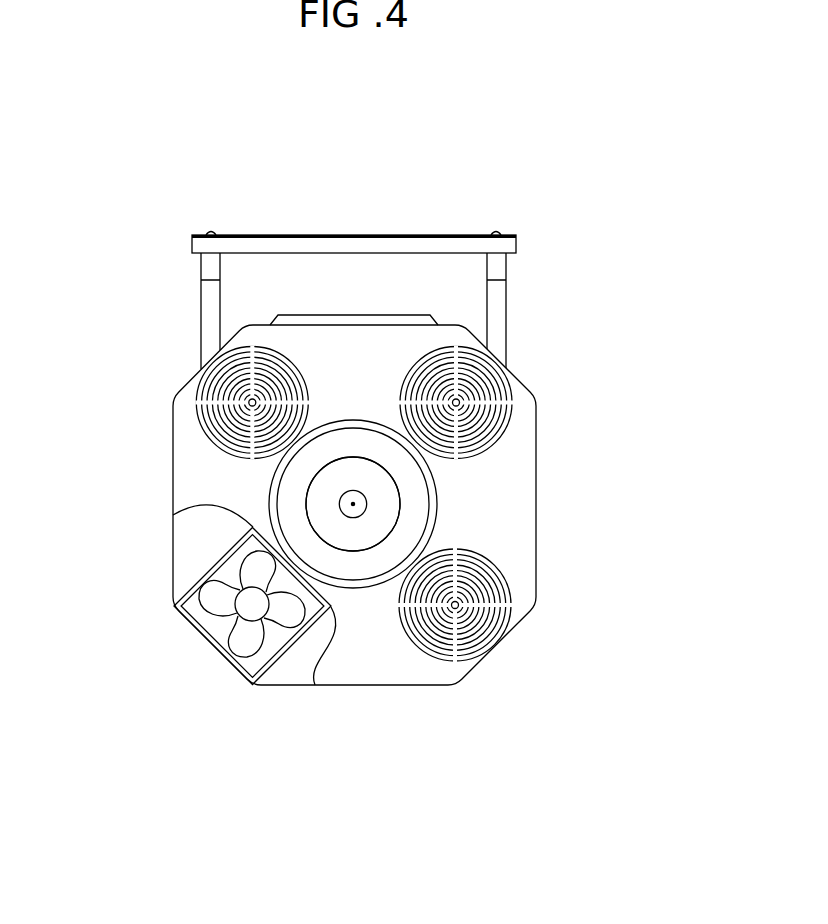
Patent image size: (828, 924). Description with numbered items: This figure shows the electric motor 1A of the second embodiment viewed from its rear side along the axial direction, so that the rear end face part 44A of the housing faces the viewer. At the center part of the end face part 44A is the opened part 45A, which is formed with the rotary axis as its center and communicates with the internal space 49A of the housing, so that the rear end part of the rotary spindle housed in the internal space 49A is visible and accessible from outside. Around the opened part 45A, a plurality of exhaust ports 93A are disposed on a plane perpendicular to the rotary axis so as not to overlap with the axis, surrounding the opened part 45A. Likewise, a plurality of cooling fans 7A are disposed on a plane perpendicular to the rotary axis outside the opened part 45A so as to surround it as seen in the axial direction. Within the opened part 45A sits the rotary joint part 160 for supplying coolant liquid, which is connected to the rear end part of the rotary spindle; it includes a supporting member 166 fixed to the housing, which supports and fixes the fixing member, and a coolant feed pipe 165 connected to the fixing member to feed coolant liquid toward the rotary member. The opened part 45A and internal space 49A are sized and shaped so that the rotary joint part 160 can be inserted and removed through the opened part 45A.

The electric motor 1A is at (500, 122).
The end face part 44A is at (536, 490).
The exhaust ports 93A is at (502, 368).
The internal space 49A is at (440, 533).
The opened part 45A is at (437, 516).
The supporting member 166 is at (373, 560).
The rotary joint part 160 is at (352, 539).
The coolant feed pipe 165 is at (353, 504).
The cooling fans 7A is at (200, 648).